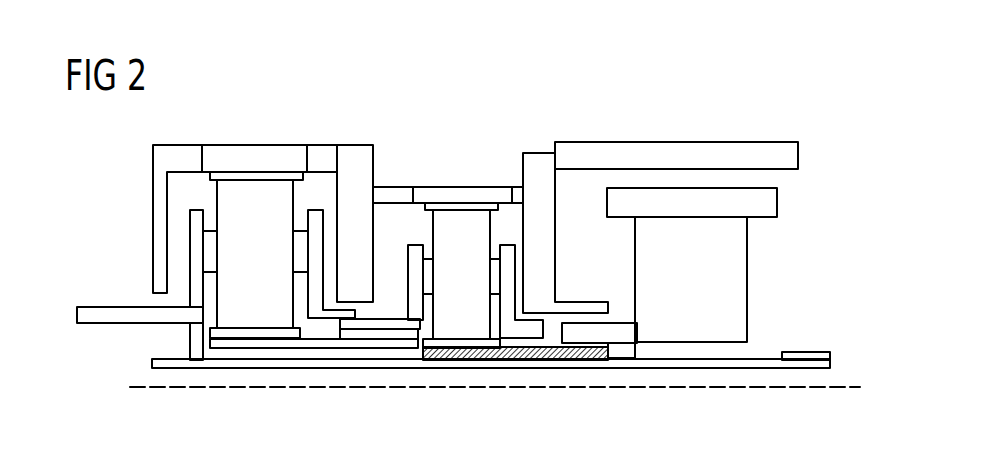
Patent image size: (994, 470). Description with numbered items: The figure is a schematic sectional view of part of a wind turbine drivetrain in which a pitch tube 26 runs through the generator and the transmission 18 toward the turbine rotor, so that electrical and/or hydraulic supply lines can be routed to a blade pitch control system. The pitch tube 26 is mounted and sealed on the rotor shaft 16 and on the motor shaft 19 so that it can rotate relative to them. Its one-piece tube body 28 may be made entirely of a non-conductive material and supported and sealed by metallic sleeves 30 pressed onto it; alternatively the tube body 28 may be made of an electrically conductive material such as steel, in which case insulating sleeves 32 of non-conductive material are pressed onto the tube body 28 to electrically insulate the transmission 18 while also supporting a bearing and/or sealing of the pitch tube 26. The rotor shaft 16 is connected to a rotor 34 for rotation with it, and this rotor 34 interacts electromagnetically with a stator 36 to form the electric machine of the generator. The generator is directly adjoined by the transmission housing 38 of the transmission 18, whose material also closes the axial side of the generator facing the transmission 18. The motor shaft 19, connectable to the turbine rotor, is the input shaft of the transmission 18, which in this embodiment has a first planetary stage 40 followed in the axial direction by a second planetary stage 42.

The rotor shaft 16 is at (612, 358).
The transmission 18 is at (547, 127).
The motor shaft 19 is at (117, 313).
The pitch tube 26 is at (787, 372).
The tube body 28 is at (727, 372).
The metallic sleeves 30 is at (531, 363).
The insulating sleeves 32 is at (197, 362).
The rotor 34 is at (730, 257).
The stator 36 is at (703, 155).
The transmission housing 38 is at (537, 173).
The first planetary stage 40 is at (315, 303).
The second planetary stage 42 is at (507, 287).